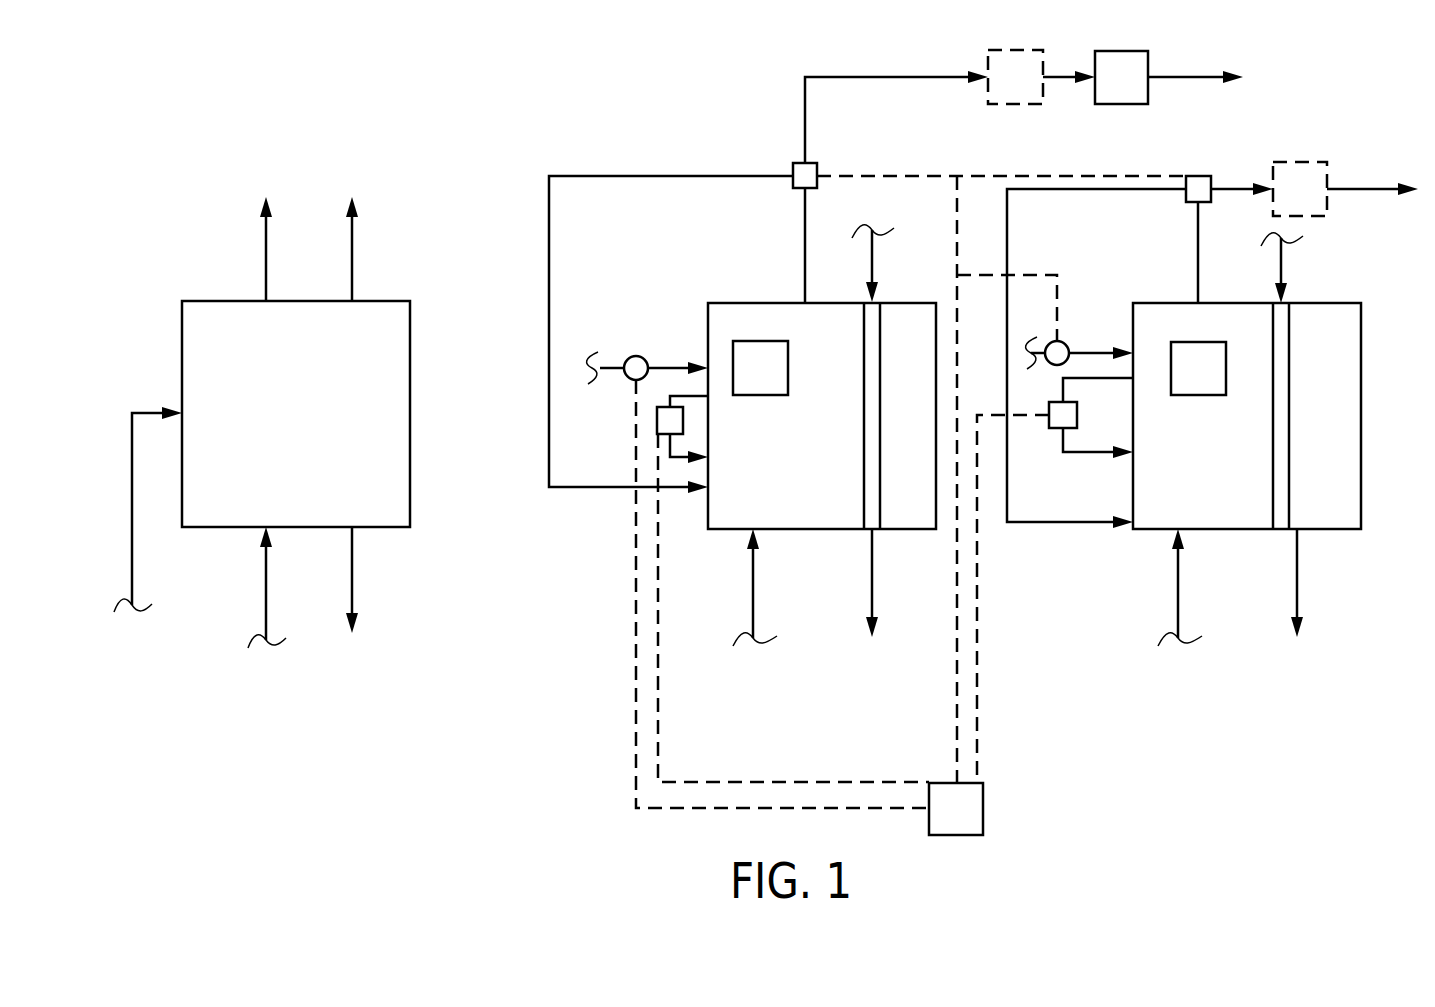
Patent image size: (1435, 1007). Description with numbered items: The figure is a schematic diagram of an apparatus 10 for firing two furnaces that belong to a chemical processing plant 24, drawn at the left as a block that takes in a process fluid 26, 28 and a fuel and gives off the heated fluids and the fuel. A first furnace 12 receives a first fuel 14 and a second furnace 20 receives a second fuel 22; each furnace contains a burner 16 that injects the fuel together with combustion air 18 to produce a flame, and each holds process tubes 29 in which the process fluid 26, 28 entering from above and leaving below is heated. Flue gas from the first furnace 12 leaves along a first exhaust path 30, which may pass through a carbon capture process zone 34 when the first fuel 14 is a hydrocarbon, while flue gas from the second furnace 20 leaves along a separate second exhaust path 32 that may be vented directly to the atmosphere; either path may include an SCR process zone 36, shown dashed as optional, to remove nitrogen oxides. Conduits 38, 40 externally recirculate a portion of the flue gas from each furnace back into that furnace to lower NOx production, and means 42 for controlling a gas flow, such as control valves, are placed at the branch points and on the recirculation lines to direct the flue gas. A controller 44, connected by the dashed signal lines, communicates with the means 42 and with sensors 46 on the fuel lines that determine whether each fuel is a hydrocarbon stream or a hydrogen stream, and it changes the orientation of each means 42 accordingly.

The apparatus 10 is at (518, 110).
The first furnace 12 is at (766, 303).
The first fuel 14 is at (355, 250).
The burner 16 is at (738, 357).
The combustion air 18 is at (750, 574).
The second furnace 20 is at (1178, 303).
The second fuel 22 is at (355, 582).
The chemical processing plant 24 is at (186, 300).
The process fluid 26 is at (262, 238).
The process fluid 28 is at (1285, 267).
The process tubes 29 is at (882, 365).
The first exhaust path 30 is at (903, 77).
The second exhaust path 32 is at (1233, 189).
The carbon capture process zone 34 is at (1122, 51).
The SCR process zone 36 is at (1017, 50).
The conduit 38 is at (684, 176).
The conduit 40 is at (670, 455).
The means for controlling a gas flow 42 is at (793, 167).
The controller 44 is at (985, 808).
The sensor 46 is at (636, 356).